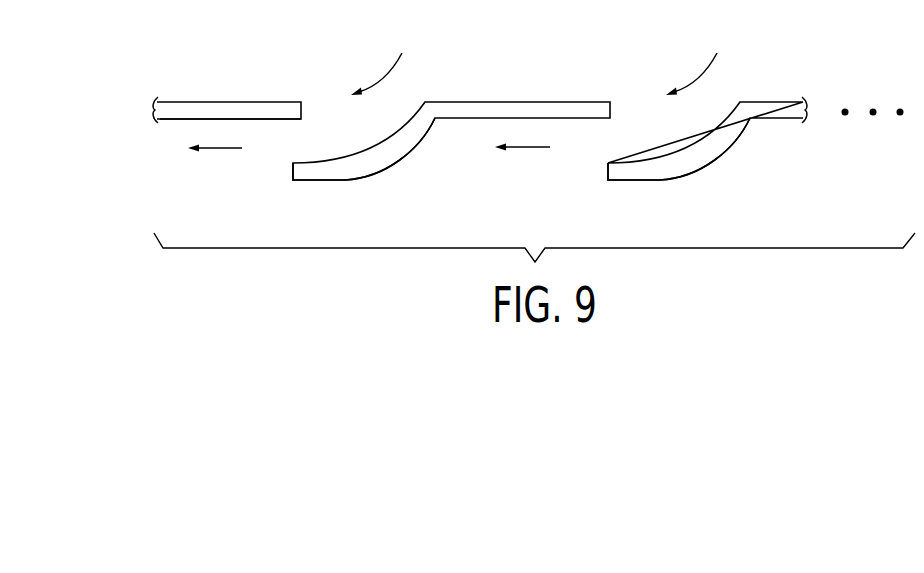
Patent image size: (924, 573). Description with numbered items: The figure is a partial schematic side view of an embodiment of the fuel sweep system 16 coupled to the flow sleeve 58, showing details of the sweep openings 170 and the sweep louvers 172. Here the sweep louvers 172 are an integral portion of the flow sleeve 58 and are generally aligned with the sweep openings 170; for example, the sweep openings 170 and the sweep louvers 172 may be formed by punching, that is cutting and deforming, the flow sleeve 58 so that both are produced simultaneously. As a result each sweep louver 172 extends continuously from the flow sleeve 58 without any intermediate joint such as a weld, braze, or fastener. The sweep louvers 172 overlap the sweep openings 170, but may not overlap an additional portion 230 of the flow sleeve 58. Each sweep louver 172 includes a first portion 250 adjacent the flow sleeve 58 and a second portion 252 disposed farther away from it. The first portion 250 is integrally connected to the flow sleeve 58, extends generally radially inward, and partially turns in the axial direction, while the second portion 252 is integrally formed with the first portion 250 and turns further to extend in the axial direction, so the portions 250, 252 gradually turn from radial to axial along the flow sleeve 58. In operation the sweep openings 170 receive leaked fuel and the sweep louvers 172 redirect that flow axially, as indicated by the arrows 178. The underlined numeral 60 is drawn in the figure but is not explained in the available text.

The fuel sweep system 16 is at (780, 197).
The flow sleeve 58 is at (173, 121).
The panel assembly 60 is at (462, 219).
The sweep opening 170 is at (393, 98).
The sweep louver 172 is at (348, 181).
The arrows 178 is at (226, 149).
The additional portion 230 is at (220, 102).
The first portion 250 is at (412, 150).
The second portion 252 is at (305, 182).